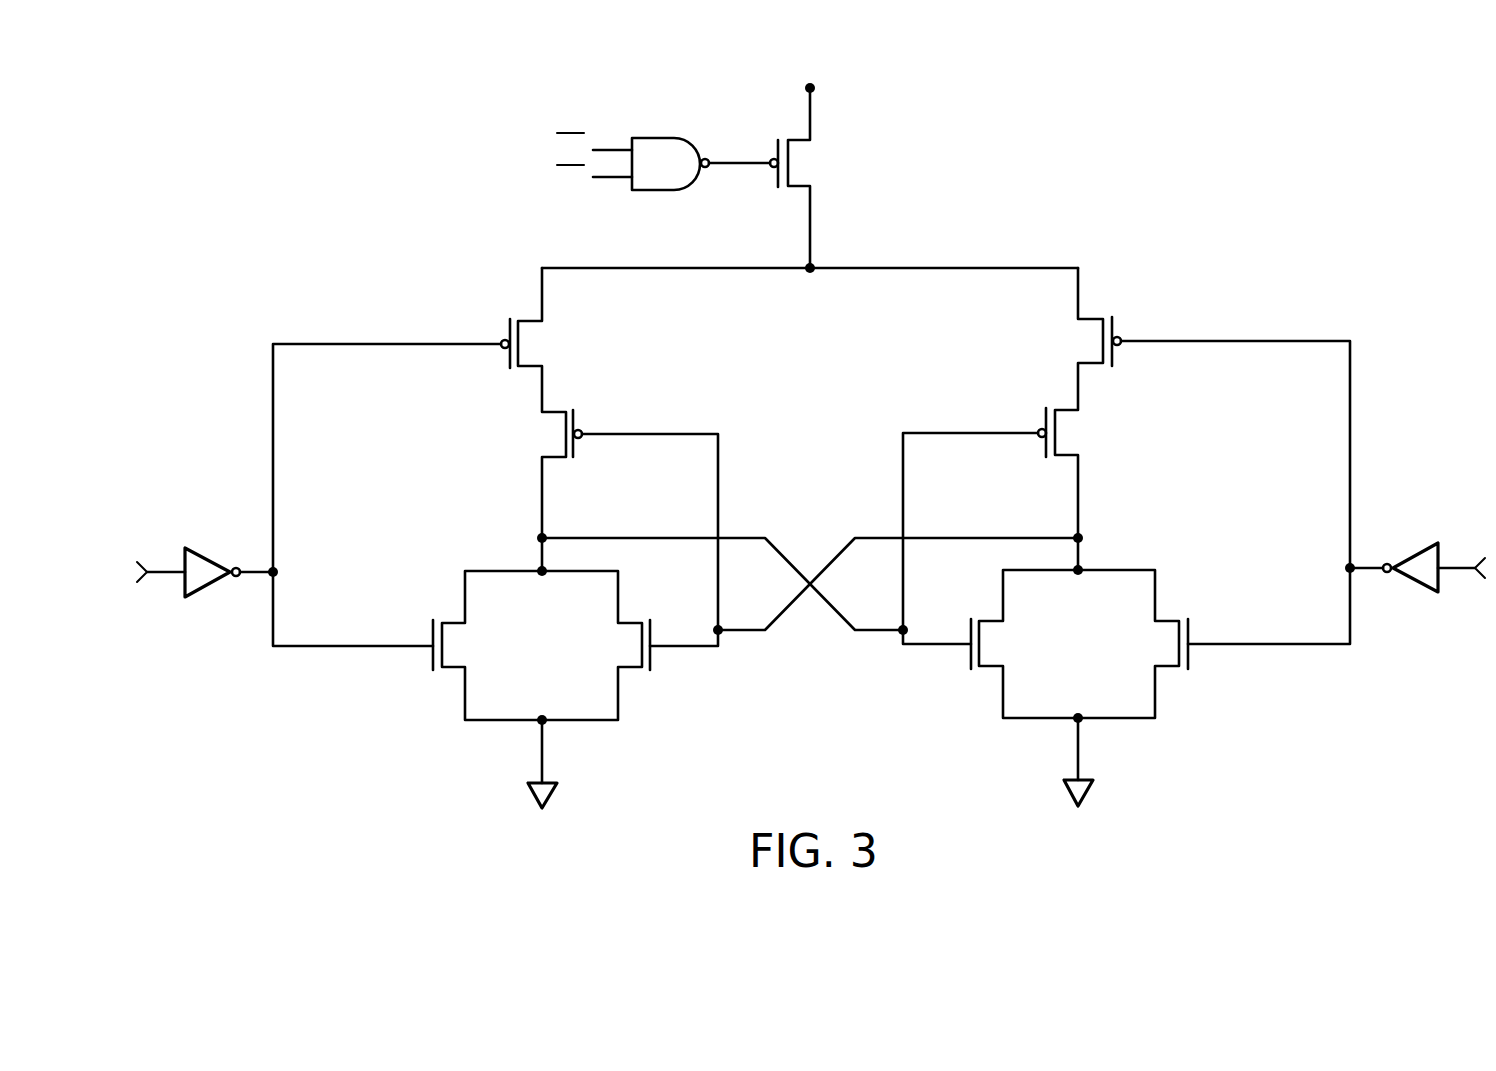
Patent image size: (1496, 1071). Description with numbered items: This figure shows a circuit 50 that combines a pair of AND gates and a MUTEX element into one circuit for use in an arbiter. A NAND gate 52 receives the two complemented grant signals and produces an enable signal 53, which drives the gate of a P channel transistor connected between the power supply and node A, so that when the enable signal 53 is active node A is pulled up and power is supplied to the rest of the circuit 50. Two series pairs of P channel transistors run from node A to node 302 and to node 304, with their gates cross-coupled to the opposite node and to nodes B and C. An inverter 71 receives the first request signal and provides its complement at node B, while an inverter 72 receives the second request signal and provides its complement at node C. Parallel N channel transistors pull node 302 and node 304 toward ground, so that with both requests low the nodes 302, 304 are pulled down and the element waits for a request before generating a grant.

The circuit 50 is at (1198, 260).
The NAND gate 52 is at (669, 137).
The enable signal 53 is at (733, 167).
The inverter 71 is at (212, 588).
The inverter 72 is at (1410, 585).
The node 302 is at (535, 534).
The node 304 is at (722, 634).